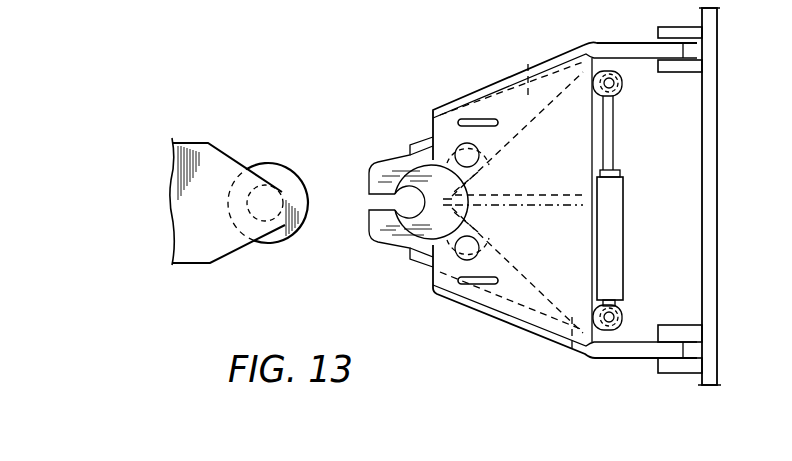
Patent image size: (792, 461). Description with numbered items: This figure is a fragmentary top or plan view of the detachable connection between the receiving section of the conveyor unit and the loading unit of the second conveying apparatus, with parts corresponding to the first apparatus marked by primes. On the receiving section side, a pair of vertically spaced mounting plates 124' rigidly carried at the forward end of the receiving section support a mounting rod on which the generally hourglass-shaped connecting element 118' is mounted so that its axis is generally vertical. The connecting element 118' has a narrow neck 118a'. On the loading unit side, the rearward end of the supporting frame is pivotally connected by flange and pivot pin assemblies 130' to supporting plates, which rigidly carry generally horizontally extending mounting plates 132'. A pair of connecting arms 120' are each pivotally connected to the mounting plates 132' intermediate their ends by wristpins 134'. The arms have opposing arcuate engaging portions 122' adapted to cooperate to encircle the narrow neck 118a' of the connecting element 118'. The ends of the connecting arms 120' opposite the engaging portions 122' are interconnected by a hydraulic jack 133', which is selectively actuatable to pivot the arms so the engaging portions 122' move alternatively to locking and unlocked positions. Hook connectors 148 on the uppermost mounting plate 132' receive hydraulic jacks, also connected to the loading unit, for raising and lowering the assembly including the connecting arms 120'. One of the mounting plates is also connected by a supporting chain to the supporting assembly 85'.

The supporting assembly 85' is at (734, 196).
The connecting element 118' is at (268, 178).
The narrow neck of connecting element 118a' is at (291, 178).
The connecting arms 120' is at (565, 208).
The engaging portions 122' is at (392, 202).
The mounting plates 124' is at (176, 201).
The flange and pivot pin assemblies 130' is at (700, 186).
The mounting plates 132' is at (530, 336).
The hydraulic jack 133' is at (635, 200).
The wristpins 134' is at (500, 201).
The hook connectors 148 is at (474, 119).